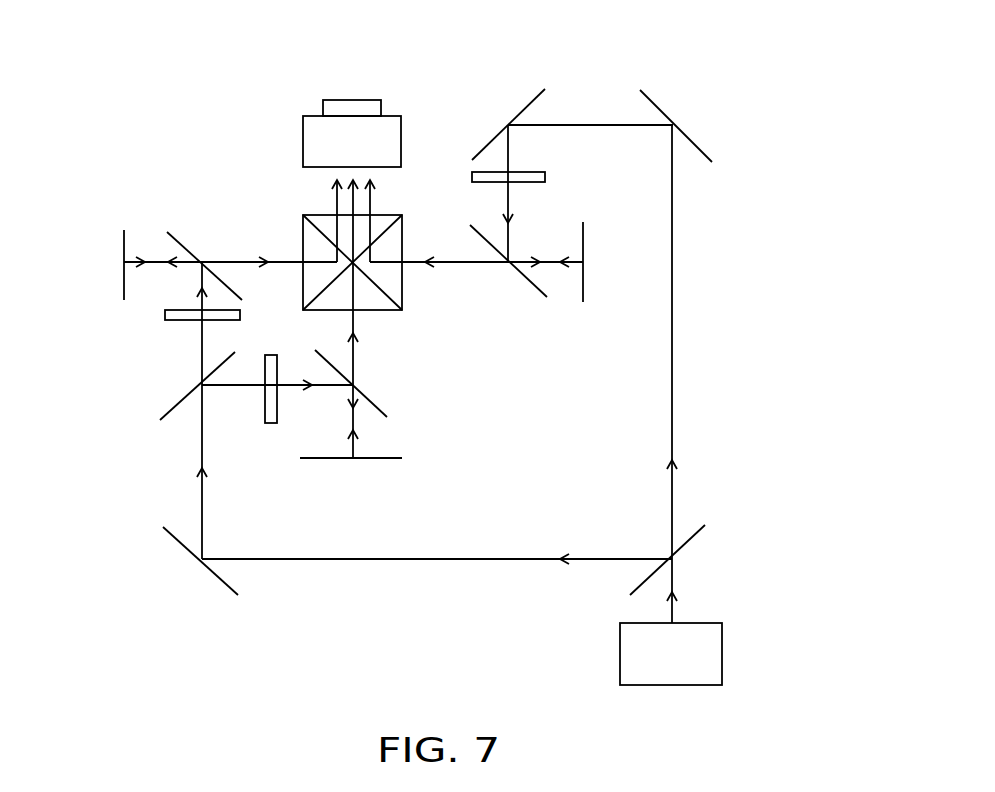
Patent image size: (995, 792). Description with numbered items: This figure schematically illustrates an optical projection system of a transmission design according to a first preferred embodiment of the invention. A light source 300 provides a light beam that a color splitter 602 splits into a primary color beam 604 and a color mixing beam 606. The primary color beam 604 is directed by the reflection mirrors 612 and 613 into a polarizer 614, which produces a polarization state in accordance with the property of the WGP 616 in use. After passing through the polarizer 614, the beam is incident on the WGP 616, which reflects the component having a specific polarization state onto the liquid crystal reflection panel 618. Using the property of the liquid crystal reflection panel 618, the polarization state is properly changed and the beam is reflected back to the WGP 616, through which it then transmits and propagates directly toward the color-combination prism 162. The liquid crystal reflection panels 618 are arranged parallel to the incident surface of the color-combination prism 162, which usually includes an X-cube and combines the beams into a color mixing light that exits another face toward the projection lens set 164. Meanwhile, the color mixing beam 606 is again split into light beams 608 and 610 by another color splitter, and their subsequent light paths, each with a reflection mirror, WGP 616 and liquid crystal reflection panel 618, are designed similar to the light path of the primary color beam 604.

The light source 300 is at (722, 645).
The color splitter 602 is at (685, 545).
The primary color beam 604 is at (672, 405).
The color mixing beam 606 is at (458, 562).
The light beam 608 is at (223, 388).
The light beam 610 is at (200, 347).
The reflection mirror 612 is at (190, 553).
The reflection mirror 613 is at (175, 410).
The polarizer 614 is at (545, 177).
The WGP 616 is at (387, 417).
The liquid crystal reflection panel 618 is at (340, 460).
The color-combination prism 162 is at (377, 216).
The projection lens set 164 is at (401, 148).